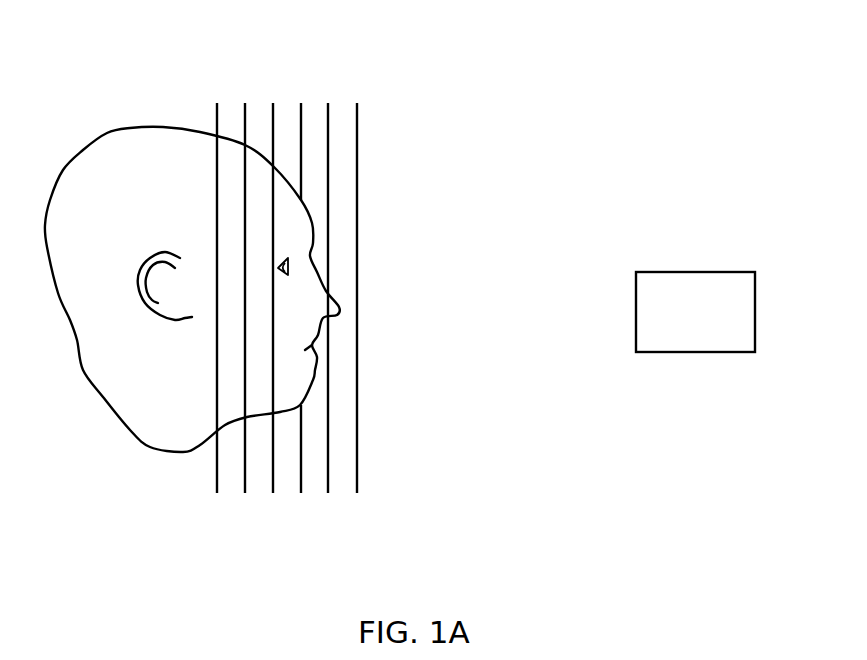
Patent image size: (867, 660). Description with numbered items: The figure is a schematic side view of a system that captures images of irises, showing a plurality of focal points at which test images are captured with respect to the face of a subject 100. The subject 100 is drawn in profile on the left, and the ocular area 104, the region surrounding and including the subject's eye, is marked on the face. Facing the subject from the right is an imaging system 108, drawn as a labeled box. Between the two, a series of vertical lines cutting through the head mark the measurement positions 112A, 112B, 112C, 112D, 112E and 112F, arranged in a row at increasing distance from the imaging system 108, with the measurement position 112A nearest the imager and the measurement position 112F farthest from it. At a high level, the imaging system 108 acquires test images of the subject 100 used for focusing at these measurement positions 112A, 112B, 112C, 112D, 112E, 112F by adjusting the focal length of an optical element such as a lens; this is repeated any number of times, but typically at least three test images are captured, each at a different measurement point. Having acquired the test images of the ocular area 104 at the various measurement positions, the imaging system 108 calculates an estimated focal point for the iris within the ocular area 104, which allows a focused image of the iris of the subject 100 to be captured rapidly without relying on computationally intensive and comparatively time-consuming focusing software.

The subject 100 is at (127, 130).
The ocular area 104 is at (279, 258).
The imaging system 108 is at (693, 272).
The measurement position 112A is at (357, 474).
The measurement position 112B is at (328, 476).
The measurement position 112C is at (301, 476).
The measurement position 112D is at (272, 478).
The measurement position 112E is at (245, 478).
The measurement position 112F is at (217, 478).